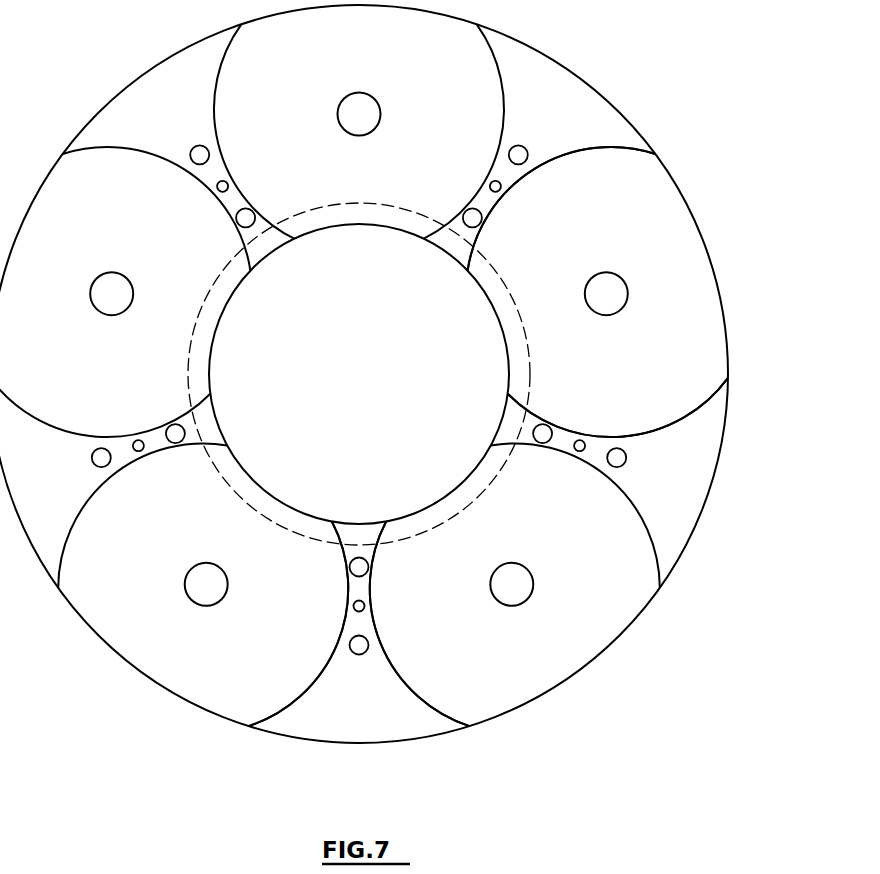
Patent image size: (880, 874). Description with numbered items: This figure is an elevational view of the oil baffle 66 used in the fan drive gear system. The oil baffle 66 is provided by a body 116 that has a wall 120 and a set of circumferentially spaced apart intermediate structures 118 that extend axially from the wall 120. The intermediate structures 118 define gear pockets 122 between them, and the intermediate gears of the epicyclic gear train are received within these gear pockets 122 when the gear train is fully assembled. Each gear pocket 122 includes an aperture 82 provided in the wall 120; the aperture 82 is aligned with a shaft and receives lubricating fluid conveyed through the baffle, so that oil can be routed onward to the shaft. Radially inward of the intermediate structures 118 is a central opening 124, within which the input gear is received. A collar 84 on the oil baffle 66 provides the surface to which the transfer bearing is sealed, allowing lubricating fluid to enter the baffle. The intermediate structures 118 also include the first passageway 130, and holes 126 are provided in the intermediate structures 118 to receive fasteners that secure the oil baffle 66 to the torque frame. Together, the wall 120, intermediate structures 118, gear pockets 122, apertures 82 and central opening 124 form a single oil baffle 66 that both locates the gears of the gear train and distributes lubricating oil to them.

The oil baffle 66 is at (749, 274).
The aperture 82 is at (533, 592).
The collar 84 is at (226, 481).
The body 116 is at (727, 386).
The intermediate structures 118 is at (690, 513).
The wall 120 is at (660, 212).
The gear pockets 122 is at (653, 379).
The central opening 124 is at (441, 421).
The holes 126 is at (353, 605).
The first passageway 130 is at (350, 643).